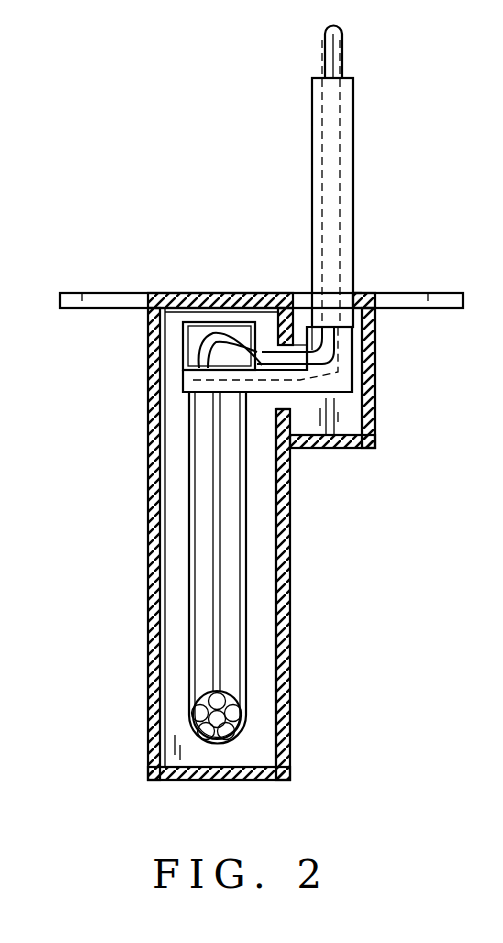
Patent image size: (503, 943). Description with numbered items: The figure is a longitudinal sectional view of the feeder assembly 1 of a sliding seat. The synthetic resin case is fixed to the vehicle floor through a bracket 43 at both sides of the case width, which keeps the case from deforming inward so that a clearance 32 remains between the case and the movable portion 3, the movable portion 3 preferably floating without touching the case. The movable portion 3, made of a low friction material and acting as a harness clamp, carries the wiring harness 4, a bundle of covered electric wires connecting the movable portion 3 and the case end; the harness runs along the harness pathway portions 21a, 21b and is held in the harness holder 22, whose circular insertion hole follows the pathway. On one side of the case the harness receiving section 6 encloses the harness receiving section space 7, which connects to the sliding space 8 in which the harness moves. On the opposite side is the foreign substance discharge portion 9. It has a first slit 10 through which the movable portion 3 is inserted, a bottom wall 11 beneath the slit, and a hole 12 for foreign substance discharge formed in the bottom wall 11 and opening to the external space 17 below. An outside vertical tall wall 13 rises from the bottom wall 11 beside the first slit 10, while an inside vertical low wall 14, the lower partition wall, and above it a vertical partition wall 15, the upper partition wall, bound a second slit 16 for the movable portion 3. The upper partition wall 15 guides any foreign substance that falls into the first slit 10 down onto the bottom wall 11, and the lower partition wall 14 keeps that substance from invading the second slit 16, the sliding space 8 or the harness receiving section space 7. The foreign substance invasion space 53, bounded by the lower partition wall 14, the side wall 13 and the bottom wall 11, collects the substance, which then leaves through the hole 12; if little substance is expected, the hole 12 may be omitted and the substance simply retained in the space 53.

The feeder assembly 1 is at (165, 82).
The movable portion 3 is at (358, 93).
The wiring harness 4 is at (218, 742).
The harness receiving section 6 is at (150, 655).
The harness receiving section space 7 is at (255, 636).
The sliding space 8 is at (172, 390).
The foreign substance discharge portion 9 is at (378, 415).
The first slit 10 is at (358, 293).
The bottom wall 11 is at (315, 437).
The hole for foreign substance discharge 12 is at (350, 443).
The outside vertical tall wall 13 is at (375, 385).
The inside vertical low wall 14 is at (290, 420).
The vertical partition wall 15 is at (285, 358).
The second slit 16 is at (280, 352).
The external space 17 is at (315, 580).
The lead wire 21a is at (345, 128).
The lead wire 21b is at (215, 405).
The harness holder 22 is at (183, 342).
The clearance 32 is at (257, 378).
The bracket 43 is at (105, 293).
The foreign substance invasion space 53 is at (372, 428).